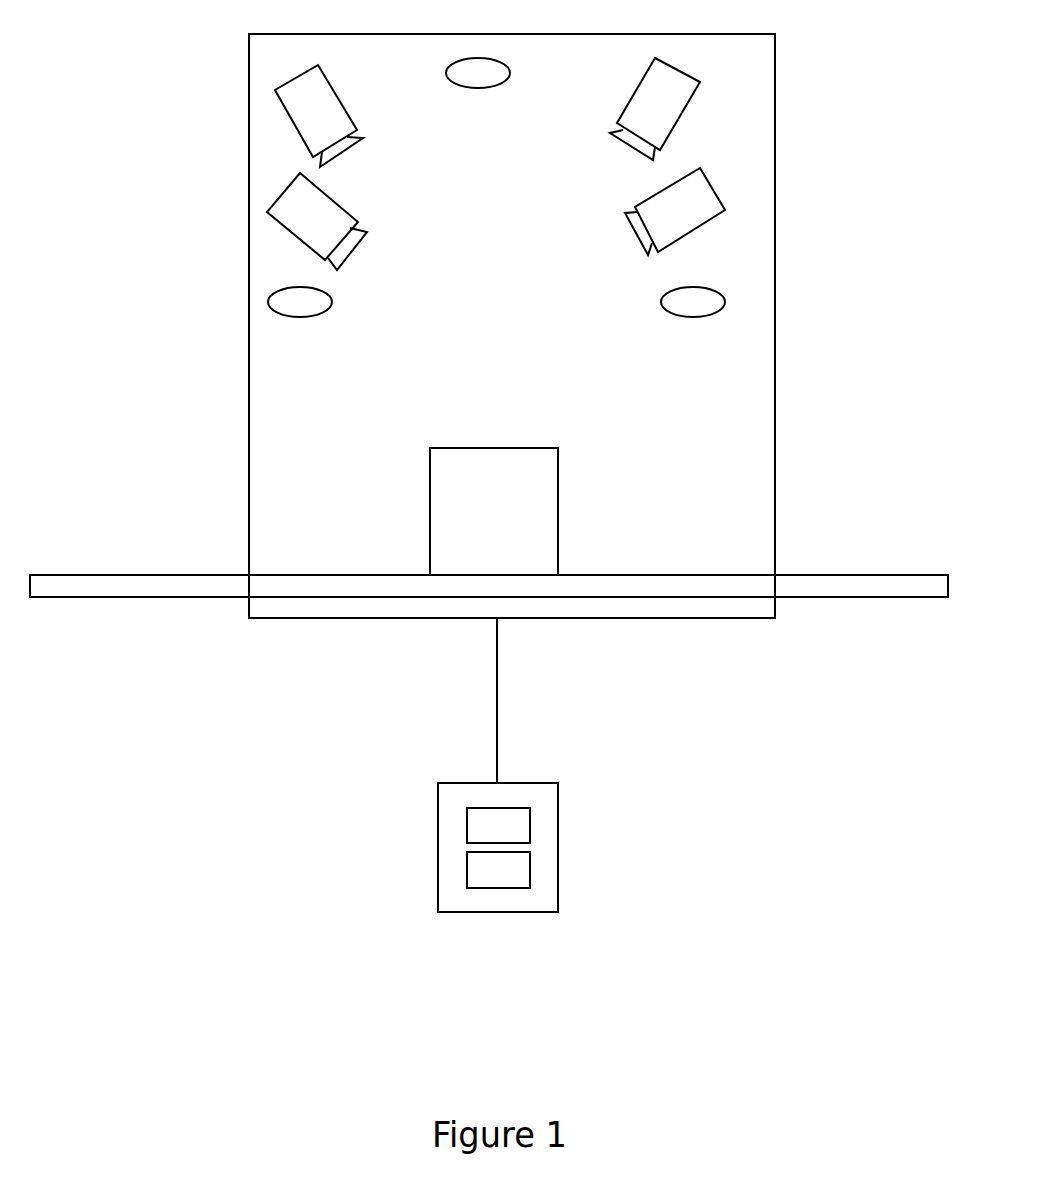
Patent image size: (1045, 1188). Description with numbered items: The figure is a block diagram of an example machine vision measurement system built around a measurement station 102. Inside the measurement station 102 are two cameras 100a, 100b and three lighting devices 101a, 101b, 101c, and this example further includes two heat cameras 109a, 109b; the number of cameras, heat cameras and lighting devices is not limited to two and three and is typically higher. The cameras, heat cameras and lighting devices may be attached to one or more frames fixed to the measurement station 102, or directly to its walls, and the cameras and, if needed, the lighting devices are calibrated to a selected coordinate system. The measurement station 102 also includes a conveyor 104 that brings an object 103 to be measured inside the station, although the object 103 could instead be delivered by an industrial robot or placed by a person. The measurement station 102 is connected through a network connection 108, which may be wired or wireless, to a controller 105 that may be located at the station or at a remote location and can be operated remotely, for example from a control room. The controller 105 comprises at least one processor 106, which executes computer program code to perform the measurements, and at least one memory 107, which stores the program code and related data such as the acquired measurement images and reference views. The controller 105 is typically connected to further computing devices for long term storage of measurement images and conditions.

The camera 100a is at (333, 197).
The camera 100b is at (627, 213).
The lighting device 101a is at (332, 293).
The lighting device 101b is at (510, 68).
The lighting device 101c is at (662, 300).
The measurement station 102 is at (248, 413).
The object 103 is at (558, 480).
The conveyor 104 is at (489, 563).
The controller 105 is at (559, 833).
The processor 106 is at (498, 825).
The memory 107 is at (498, 870).
The network connection 108 is at (497, 715).
The heat camera 109a is at (340, 95).
The heat camera 109b is at (702, 78).